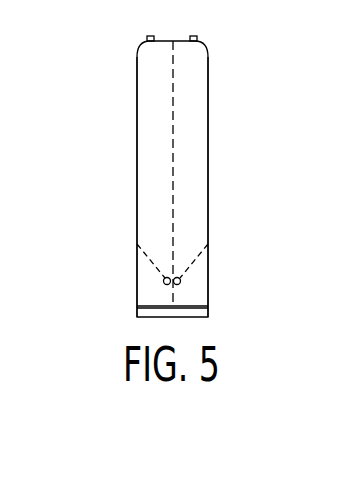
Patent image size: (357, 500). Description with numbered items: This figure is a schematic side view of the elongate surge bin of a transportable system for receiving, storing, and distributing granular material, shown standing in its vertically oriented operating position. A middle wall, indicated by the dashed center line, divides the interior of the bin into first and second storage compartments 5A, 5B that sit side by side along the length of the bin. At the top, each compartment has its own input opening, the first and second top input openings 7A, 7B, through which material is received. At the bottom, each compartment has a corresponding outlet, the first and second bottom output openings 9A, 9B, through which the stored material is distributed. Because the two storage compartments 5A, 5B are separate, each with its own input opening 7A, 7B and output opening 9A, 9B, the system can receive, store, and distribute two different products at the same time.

The first storage compartment 5A is at (150, 128).
The second storage compartment 5B is at (194, 128).
The first top input opening 7A is at (150, 36).
The second top input opening 7B is at (195, 36).
The first bottom output opening 9A is at (164, 283).
The second bottom output opening 9B is at (181, 283).